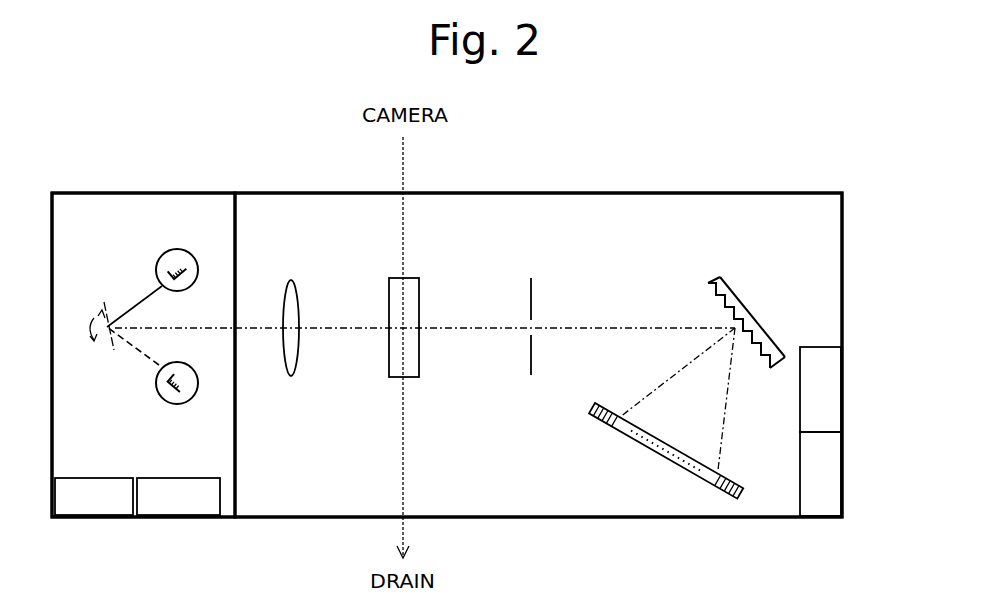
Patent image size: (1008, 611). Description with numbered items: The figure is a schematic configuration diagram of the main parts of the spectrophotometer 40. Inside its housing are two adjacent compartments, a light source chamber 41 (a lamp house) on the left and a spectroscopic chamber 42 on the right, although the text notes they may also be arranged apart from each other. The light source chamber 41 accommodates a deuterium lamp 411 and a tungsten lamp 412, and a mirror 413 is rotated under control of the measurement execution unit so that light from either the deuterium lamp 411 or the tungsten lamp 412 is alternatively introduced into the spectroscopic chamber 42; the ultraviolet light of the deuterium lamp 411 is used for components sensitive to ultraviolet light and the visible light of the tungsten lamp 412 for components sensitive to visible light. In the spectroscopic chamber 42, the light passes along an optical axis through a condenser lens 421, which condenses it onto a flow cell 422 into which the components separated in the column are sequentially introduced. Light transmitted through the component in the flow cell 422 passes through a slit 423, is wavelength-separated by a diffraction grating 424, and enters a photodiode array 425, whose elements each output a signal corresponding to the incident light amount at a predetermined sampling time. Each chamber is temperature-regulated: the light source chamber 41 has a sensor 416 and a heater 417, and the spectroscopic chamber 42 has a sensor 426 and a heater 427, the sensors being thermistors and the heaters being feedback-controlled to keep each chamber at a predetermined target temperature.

The spectrophotometer 40 is at (751, 166).
The light source chamber 41 is at (90, 449).
The spectroscopic chamber 42 is at (289, 501).
The deuterium lamp 411 is at (183, 248).
The tungsten lamp 412 is at (185, 407).
The mirror 413 is at (105, 306).
The sensor 416 is at (93, 519).
The heater 417 is at (173, 519).
The condenser lens 421 is at (294, 282).
The flow cell 422 is at (419, 290).
The slit 423 is at (532, 289).
The diffraction grating 424 is at (742, 293).
The photodiode array 425 is at (626, 438).
The sensor 426 is at (845, 392).
The heater 427 is at (845, 437).